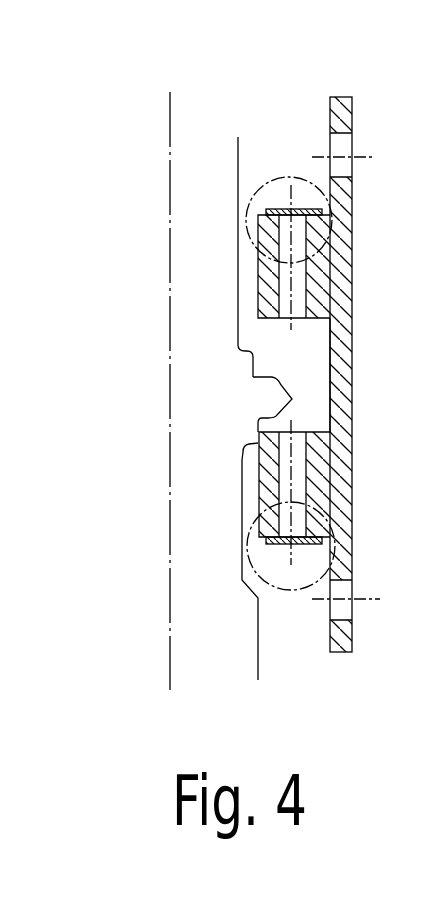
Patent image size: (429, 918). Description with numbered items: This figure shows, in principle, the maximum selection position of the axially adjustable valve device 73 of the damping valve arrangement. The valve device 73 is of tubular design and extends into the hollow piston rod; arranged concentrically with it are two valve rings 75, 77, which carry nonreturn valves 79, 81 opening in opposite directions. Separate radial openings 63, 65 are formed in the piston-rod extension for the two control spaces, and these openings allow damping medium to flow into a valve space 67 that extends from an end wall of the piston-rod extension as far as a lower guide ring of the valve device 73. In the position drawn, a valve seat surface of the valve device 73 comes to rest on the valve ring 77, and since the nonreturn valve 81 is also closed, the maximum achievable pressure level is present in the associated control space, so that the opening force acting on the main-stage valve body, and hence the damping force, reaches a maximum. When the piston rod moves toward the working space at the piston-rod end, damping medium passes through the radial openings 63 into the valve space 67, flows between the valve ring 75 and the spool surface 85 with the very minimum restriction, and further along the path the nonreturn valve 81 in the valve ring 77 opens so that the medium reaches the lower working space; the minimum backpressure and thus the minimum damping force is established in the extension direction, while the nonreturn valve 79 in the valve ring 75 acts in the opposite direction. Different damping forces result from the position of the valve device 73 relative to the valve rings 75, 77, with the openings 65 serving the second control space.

The radial openings 63 is at (348, 142).
The radial openings 65 is at (340, 607).
The valve space 67 is at (308, 378).
The valve device 73 is at (242, 608).
The valve ring 75 is at (345, 232).
The valve ring 77 is at (340, 476).
The nonreturn valve 79 is at (284, 178).
The nonreturn valve 81 is at (332, 520).
The valve spool surface 85 is at (252, 375).